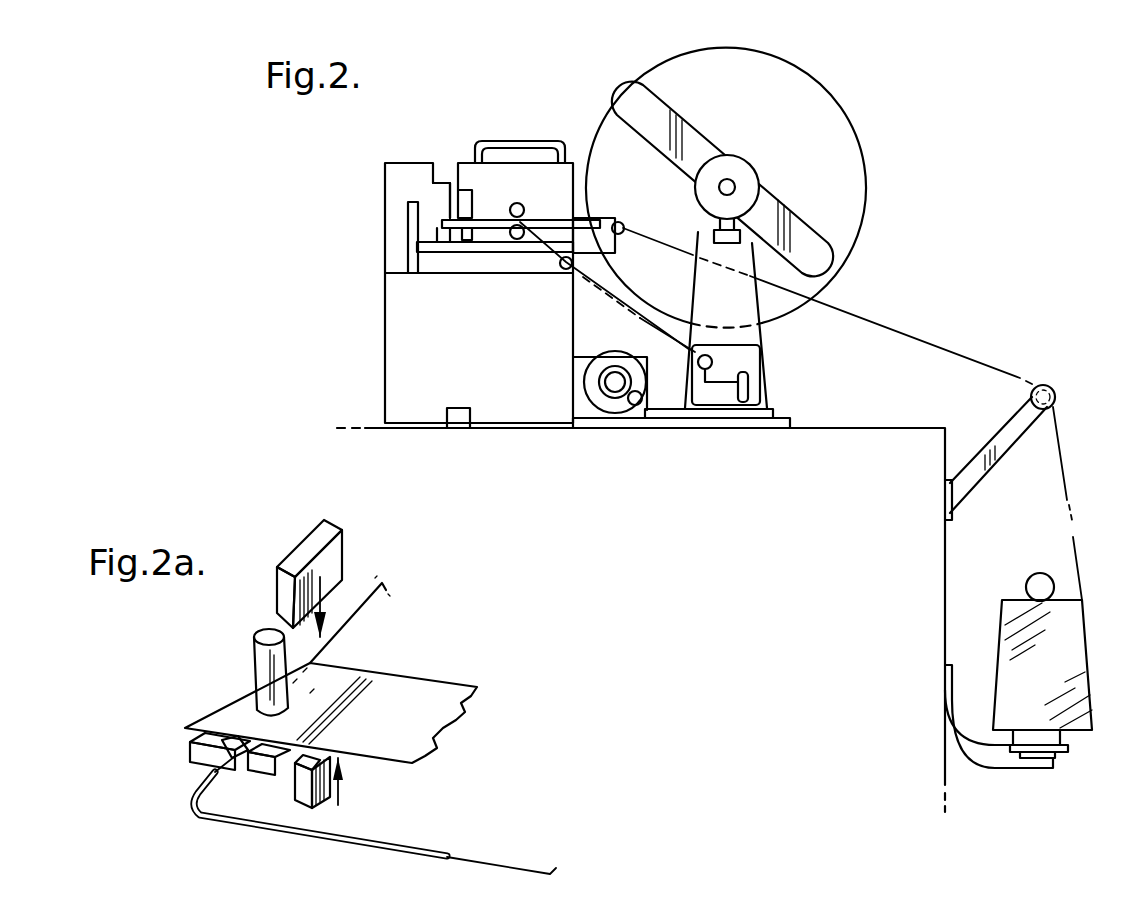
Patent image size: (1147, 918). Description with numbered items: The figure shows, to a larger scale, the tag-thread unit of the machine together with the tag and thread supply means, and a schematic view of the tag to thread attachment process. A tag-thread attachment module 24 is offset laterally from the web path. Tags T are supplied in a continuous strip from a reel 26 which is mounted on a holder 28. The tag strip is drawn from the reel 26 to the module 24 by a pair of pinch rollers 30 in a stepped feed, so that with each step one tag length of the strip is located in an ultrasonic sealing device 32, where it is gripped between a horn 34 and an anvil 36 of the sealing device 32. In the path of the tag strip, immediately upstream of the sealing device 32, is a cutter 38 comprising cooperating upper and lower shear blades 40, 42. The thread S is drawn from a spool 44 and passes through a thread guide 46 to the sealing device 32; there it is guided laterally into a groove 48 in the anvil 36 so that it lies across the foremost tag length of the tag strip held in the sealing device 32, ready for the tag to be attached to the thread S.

In FIG. 2, the tag-thread attachment module 24 is at (356, 305).
In FIG. 2, the reel 26 is at (875, 208).
In FIG. 2, the holder 28 is at (757, 172).
In FIG. 2, the pinch rollers 30 is at (518, 205).
In FIG. 2, the ultrasonic sealing device 32 is at (447, 195).
In FIG. 2A, the horn 34 is at (262, 662).
In FIG. 2A, the anvil 36 is at (190, 750).
In FIG. 2, the cutter 38 is at (470, 205).
In FIG. 2A, the upper shear blade 40 is at (333, 553).
In FIG. 2A, the lower shear blade 42 is at (353, 770).
In FIG. 2, the spool 44 is at (1080, 668).
In FIG. 2A, the thread guide 46 is at (440, 853).
In FIG. 2A, the groove 48 is at (243, 755).
In FIG. 2, the thread S is at (990, 362).
In FIG. 2A, the thread S is at (525, 867).
In FIG. 2A, the tags T is at (223, 703).